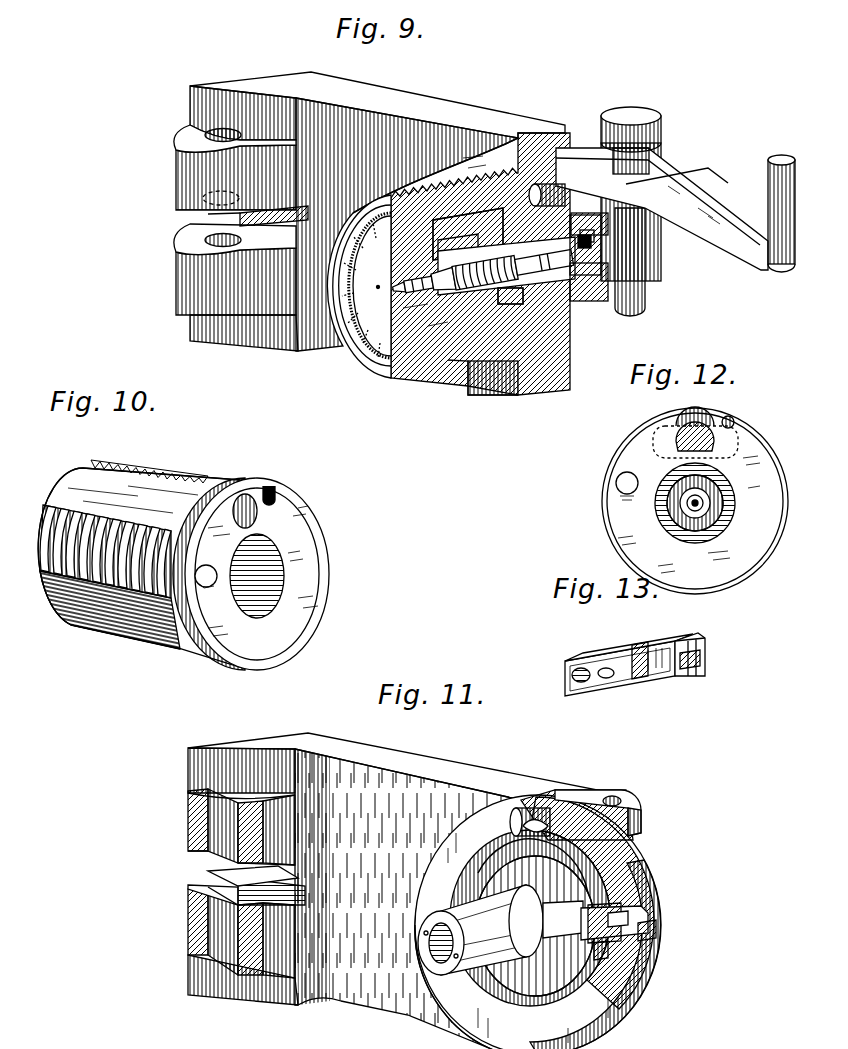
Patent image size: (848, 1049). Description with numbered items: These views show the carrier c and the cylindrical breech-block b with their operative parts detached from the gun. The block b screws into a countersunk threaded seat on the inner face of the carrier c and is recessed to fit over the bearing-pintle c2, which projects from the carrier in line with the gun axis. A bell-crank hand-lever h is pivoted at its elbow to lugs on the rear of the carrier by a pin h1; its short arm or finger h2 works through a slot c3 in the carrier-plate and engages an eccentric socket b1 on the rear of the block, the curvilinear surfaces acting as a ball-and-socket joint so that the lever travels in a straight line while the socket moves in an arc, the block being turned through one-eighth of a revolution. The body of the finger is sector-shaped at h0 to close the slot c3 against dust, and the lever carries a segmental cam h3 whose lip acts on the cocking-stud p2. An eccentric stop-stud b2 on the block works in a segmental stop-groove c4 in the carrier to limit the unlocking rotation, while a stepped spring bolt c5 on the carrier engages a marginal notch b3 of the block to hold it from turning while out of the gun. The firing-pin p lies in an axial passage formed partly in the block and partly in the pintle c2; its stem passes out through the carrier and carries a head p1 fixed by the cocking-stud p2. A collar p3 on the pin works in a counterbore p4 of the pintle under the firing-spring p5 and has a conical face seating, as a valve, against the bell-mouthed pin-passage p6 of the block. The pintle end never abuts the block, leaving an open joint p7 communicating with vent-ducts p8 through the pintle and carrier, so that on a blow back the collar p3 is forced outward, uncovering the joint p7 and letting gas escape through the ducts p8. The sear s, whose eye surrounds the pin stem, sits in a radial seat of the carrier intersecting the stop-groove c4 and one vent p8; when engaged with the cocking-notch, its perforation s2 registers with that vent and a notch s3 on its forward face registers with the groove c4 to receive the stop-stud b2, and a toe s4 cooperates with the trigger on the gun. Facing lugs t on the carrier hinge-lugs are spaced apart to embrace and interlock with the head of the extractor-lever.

In FIG. 9, the carrier c is at (452, 112).
In FIG. 11, the carrier c is at (456, 768).
In FIG. 9, the bearing-pintle c2 is at (457, 362).
In FIG. 11, the bearing-pintle c2 is at (438, 962).
In FIG. 11, the slot in the carrier-plate c3 is at (535, 810).
In FIG. 11, the segmental stop-groove c4 is at (648, 886).
In FIG. 9, the spring bolt or latch c5 is at (500, 153).
In FIG. 11, the spring bolt or latch c5 is at (503, 812).
In FIG. 9, the bell-crank hand-lever h is at (700, 192).
In FIG. 9, the sector-shaped body of the lever-arm h0 is at (677, 163).
In FIG. 9, the pivot pin of the hand-lever h1 is at (632, 100).
In FIG. 9, the short arm or finger of the hand-lever h2 is at (556, 172).
In FIG. 12, the short arm or finger of the hand-lever h2 is at (668, 431).
In FIG. 9, the segmental cam h3 is at (589, 220).
In FIG. 9, the firing-pin p is at (567, 296).
In FIG. 9, the head of the firing-pin p1 is at (605, 296).
In FIG. 9, the cocking-stud p2 is at (636, 246).
In FIG. 9, the collar of the firing-pin p3 is at (455, 245).
In FIG. 9, the counterbore of the pintle p4 is at (468, 234).
In FIG. 9, the firing-spring p5 is at (512, 294).
In FIG. 9, the pin-passage in the block p6 is at (415, 313).
In FIG. 12, the pin-passage in the block p6 is at (718, 484).
In FIG. 9, the open joint p7 is at (438, 332).
In FIG. 11, the vent-ducts p8 is at (425, 915).
In FIG. 9, the breech-block b is at (398, 366).
In FIG. 10, the breech-block b is at (295, 511).
In FIG. 12, the breech-block b is at (765, 500).
In FIG. 10, the socket b1 is at (240, 486).
In FIG. 12, the socket b1 is at (694, 410).
In FIG. 10, the stop-stud b2 is at (198, 581).
In FIG. 12, the stop-stud b2 is at (619, 487).
In FIG. 10, the marginal notch b3 is at (265, 481).
In FIG. 12, the marginal notch b3 is at (727, 410).
In FIG. 13, the sear s is at (645, 647).
In FIG. 11, the sear s is at (666, 930).
In FIG. 13, the perforation in the sear s2 is at (598, 671).
In FIG. 13, the notch on the forward face of the sear s3 is at (633, 672).
In FIG. 11, the notch on the forward face of the sear s3 is at (598, 950).
In FIG. 13, the toe of the sear s4 is at (700, 658).
In FIG. 11, the toe of the sear s4 is at (650, 948).
In FIG. 9, the lugs on the carrier t is at (205, 216).
In FIG. 11, the lugs on the carrier t is at (225, 868).